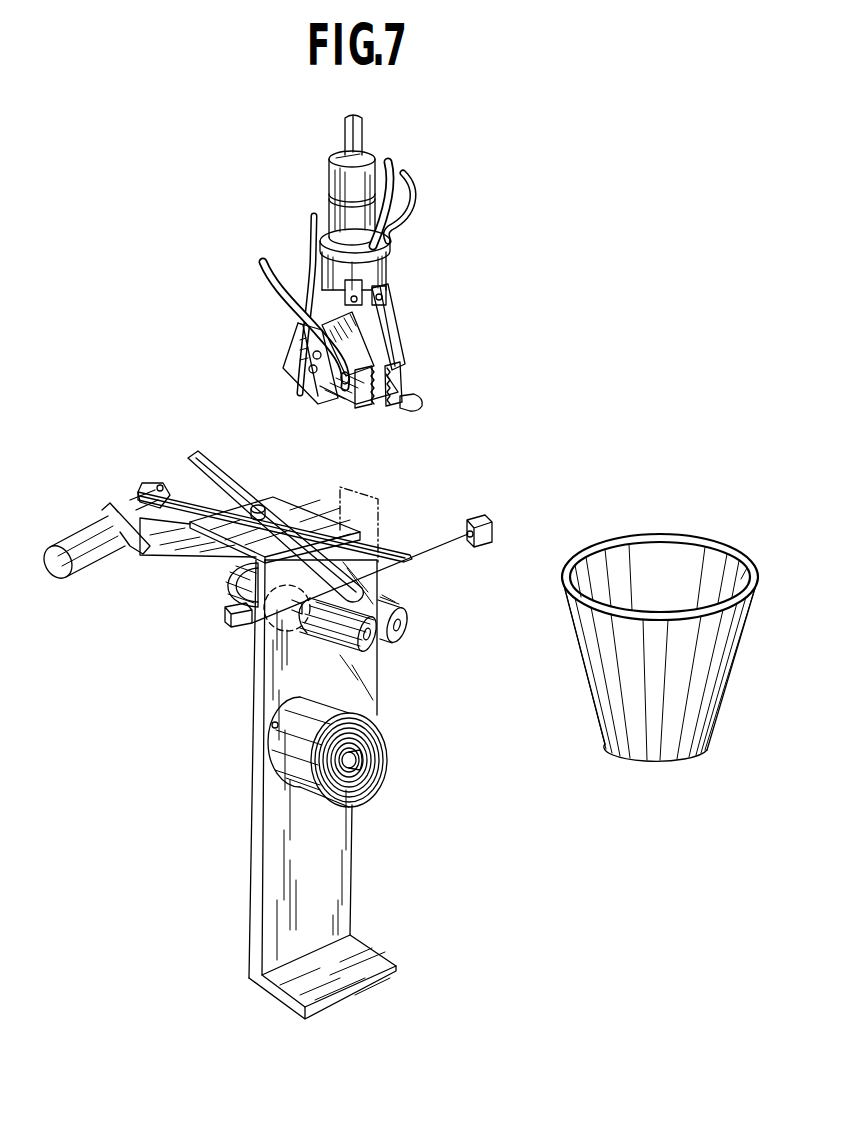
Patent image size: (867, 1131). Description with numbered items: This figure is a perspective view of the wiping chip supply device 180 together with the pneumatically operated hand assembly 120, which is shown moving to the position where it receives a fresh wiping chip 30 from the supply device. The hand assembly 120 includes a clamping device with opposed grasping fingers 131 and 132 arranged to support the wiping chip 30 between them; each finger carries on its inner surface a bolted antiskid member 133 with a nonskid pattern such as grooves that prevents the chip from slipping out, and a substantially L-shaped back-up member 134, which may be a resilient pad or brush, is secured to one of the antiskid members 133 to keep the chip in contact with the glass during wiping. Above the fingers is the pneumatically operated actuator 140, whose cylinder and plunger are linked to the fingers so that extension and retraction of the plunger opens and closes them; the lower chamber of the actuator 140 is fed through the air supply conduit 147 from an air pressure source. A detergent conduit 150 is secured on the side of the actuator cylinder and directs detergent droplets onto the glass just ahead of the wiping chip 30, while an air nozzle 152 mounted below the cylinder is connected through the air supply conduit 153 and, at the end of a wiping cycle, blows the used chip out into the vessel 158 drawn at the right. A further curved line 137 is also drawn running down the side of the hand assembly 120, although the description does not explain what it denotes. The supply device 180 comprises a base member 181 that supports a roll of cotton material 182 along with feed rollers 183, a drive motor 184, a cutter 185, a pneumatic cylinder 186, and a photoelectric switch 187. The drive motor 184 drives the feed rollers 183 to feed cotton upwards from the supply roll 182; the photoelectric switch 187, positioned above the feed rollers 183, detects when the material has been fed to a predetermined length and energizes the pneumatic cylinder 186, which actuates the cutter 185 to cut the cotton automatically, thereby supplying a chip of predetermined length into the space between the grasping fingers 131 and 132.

The hand assembly 120 is at (462, 296).
The pneumatically operated actuator 140 is at (336, 210).
The air supply conduit 147 is at (404, 178).
The air supply conduit 153 is at (384, 194).
The detergent conduit 150 is at (311, 230).
The spring tube 137 is at (282, 294).
The grasping finger 131 is at (325, 384).
The air nozzle 152 is at (378, 326).
The grasping finger 132 is at (402, 348).
The antiskid member 133 is at (392, 382).
The back-up member 134 is at (413, 398).
The wiping chip supply device 180 is at (190, 683).
The base member 181 is at (258, 803).
The roll of cotton material 182 is at (386, 760).
The feed rollers 183 is at (400, 649).
The drive motor 184 is at (230, 585).
The cutter 185 is at (316, 520).
The pneumatic cylinder 186 is at (86, 528).
The photoelectric switch 187 is at (226, 620).
The wiping chip 30 is at (376, 502).
The vessel 158 is at (606, 540).